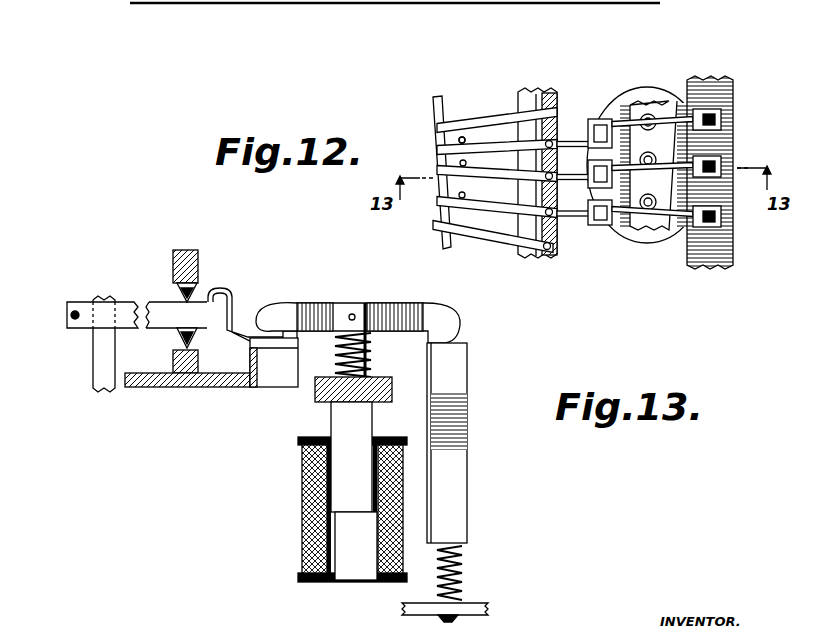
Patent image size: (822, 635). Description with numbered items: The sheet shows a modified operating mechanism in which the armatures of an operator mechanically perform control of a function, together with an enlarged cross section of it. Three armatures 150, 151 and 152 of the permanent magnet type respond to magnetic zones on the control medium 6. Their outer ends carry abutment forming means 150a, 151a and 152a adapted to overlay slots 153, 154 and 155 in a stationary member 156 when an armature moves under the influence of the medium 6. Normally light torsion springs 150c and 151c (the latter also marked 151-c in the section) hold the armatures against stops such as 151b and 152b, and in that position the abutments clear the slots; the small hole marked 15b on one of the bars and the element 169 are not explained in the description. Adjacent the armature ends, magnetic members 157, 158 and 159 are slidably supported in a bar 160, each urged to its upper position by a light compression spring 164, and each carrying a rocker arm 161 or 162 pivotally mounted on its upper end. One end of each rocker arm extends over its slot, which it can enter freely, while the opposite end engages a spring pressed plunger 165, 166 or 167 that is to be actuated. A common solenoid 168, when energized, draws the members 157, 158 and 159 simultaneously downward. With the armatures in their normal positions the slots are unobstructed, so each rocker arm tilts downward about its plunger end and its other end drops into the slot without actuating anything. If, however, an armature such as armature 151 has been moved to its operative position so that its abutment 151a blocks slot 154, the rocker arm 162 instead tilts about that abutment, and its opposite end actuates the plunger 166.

In FIG. 12, the medium 6 is at (440, 94).
In FIG. 13, the medium 6 is at (66, 315).
In FIG. 12, the contact arm hole 15b is at (462, 137).
In FIG. 12, the armature 150 is at (437, 128).
In FIG. 12, the abutment forming means 150a is at (605, 112).
In FIG. 12, the torsion spring 150c is at (541, 133).
In FIG. 12, the armature 151 is at (437, 150).
In FIG. 13, the armature 151 is at (128, 306).
In FIG. 12, the abutment forming means 151a is at (562, 252).
In FIG. 13, the abutment forming means 151a is at (283, 330).
In FIG. 12, the stop 151b is at (466, 162).
In FIG. 13, the stop 151b is at (93, 378).
In FIG. 12, the torsion spring 151c is at (542, 148).
In FIG. 13, the torsion spring 151-c is at (172, 300).
In FIG. 12, the armature 152 is at (437, 208).
In FIG. 12, the abutment forming means 152a is at (537, 217).
In FIG. 12, the stop 152b is at (465, 195).
In FIG. 12, the slot 153 is at (612, 108).
In FIG. 12, the slot 154 is at (545, 246).
In FIG. 13, the slot 154 is at (268, 388).
In FIG. 12, the slot 155 is at (600, 262).
In FIG. 12, the stationary member 156 is at (580, 252).
In FIG. 13, the stationary member 156 is at (147, 385).
In FIG. 12, the magnetic member 157 is at (650, 134).
In FIG. 12, the magnetic member 158 is at (748, 126).
In FIG. 13, the magnetic member 158 is at (333, 498).
In FIG. 12, the magnetic member 159 is at (656, 228).
In FIG. 12, the bar 160 is at (653, 108).
In FIG. 13, the bar 160 is at (330, 397).
In FIG. 12, the rocker arm 161 is at (707, 108).
In FIG. 12, the rocker arm 162 is at (712, 170).
In FIG. 13, the rocker arm 162 is at (388, 303).
In FIG. 12, the compression spring 164 is at (690, 105).
In FIG. 13, the compression spring 164 is at (372, 358).
In FIG. 12, the spring pressed plunger 165 is at (732, 108).
In FIG. 12, the spring pressed plunger 166 is at (718, 172).
In FIG. 13, the spring pressed plunger 166 is at (465, 441).
In FIG. 12, the spring pressed plunger 167 is at (722, 220).
In FIG. 12, the solenoid 168 is at (625, 255).
In FIG. 13, the solenoid 168 is at (302, 550).
In FIG. 12, the connecting rod 169 is at (700, 197).